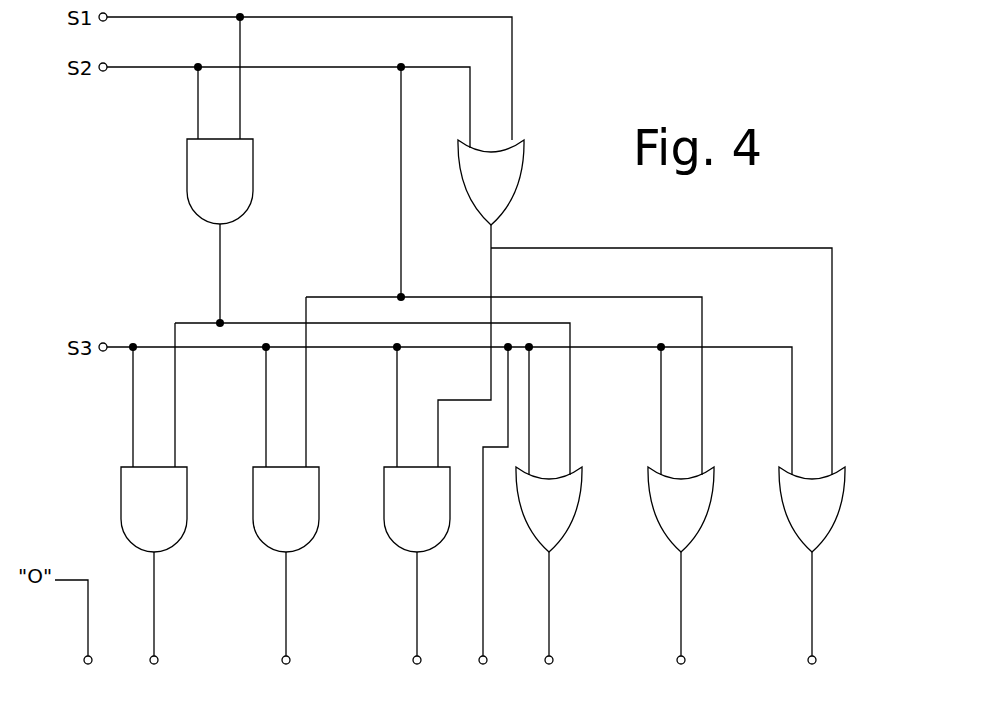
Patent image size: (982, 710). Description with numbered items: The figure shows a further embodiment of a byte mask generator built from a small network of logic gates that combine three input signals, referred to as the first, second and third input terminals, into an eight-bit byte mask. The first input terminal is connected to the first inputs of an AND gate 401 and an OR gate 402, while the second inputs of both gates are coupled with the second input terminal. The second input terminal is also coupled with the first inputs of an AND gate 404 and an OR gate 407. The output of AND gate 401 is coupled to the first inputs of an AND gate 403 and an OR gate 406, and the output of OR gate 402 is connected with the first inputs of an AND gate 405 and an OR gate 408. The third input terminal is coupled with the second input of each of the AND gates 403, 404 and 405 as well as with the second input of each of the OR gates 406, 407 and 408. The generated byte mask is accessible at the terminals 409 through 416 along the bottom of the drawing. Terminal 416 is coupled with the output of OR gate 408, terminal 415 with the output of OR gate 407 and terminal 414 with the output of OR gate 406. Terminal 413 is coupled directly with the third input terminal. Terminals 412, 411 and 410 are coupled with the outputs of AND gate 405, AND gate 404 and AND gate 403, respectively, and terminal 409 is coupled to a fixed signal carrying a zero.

The AND gate 401 is at (212, 198).
The OR gate 402 is at (483, 198).
The AND gate 403 is at (143, 527).
The AND gate 404 is at (277, 527).
The AND gate 405 is at (409, 527).
The OR gate 406 is at (549, 530).
The OR gate 407 is at (673, 525).
The OR gate 408 is at (805, 527).
The terminal 409 is at (88, 680).
The terminal 410 is at (154, 628).
The terminal 411 is at (286, 628).
The terminal 412 is at (417, 628).
The terminal 413 is at (483, 680).
The terminal 414 is at (549, 628).
The terminal 415 is at (681, 628).
The terminal 416 is at (812, 628).